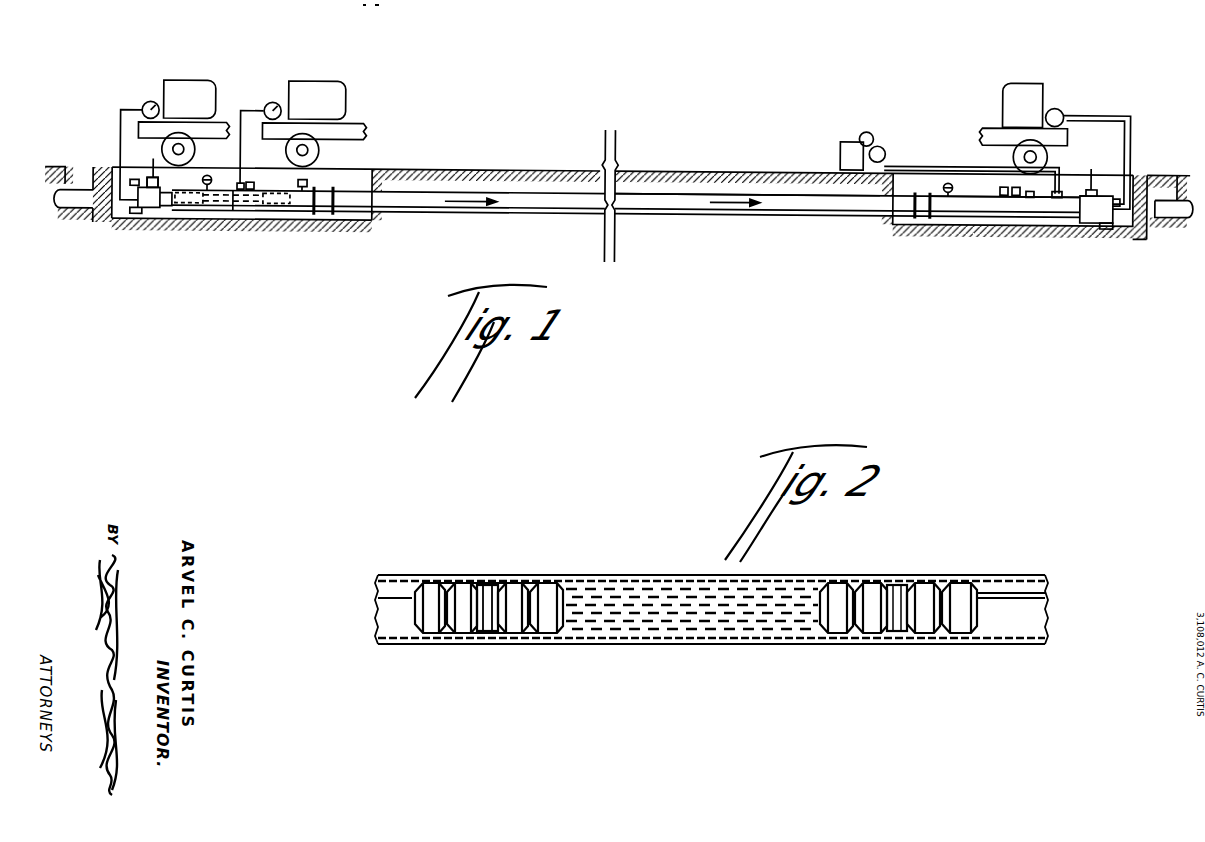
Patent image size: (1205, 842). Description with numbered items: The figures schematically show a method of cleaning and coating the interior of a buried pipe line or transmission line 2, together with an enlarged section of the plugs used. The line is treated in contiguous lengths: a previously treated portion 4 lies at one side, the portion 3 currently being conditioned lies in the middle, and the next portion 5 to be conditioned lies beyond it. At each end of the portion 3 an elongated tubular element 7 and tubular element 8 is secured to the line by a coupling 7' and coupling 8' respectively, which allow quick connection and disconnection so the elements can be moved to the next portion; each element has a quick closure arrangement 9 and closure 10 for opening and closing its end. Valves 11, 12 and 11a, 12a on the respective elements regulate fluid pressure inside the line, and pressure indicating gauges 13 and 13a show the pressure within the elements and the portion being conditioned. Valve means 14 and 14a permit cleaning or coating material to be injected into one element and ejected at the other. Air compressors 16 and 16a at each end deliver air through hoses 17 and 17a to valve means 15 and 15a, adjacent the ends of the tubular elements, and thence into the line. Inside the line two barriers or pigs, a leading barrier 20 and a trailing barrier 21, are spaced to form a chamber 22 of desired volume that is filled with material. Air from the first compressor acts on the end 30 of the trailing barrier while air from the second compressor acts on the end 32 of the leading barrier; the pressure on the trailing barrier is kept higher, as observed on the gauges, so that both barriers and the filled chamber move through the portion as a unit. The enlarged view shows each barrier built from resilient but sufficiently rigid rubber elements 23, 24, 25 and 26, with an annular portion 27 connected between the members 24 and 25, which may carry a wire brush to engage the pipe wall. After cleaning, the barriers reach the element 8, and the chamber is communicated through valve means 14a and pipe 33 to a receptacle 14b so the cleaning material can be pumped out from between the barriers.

In FIG. 1, the transmission line 2 is at (663, 194).
In FIG. 1, the portion of the transmission line to be treated 3 is at (558, 214).
In FIG. 2, the portion of the transmission line to be treated 3 is at (648, 576).
In FIG. 1, the previously treated portion 4 is at (60, 215).
In FIG. 1, the next portion of the transmission line 5 is at (1175, 214).
In FIG. 1, the tubular element 7 is at (227, 238).
In FIG. 1, the coupling 7' is at (333, 225).
In FIG. 1, the tubular element 8 is at (1004, 237).
In FIG. 1, the coupling 8' is at (909, 242).
In FIG. 1, the quick closure arrangement 9 is at (138, 185).
In FIG. 1, the quick closure arrangement 10 is at (1114, 224).
In FIG. 1, the valve 11 is at (307, 182).
In FIG. 1, the valve 11a is at (1030, 195).
In FIG. 1, the valve 12 is at (250, 184).
In FIG. 1, the valve 12a is at (1010, 184).
In FIG. 1, the pressure indicating gauge 13 is at (207, 178).
In FIG. 1, the pressure indicating gauge 13a is at (946, 182).
In FIG. 1, the valve means 14 is at (244, 193).
In FIG. 1, the valve means 14a is at (1057, 196).
In FIG. 1, the receptacle 14b is at (838, 145).
In FIG. 1, the valve means 15 is at (155, 225).
In FIG. 1, the valve means 15a is at (1084, 221).
In FIG. 1, the air compressor 16 is at (152, 92).
In FIG. 1, the air compressor 16a is at (1059, 99).
In FIG. 1, the hose 17 is at (118, 117).
In FIG. 1, the hose 17a is at (1130, 120).
In FIG. 1, the barrier 20 is at (290, 230).
In FIG. 2, the barrier 20 is at (842, 646).
In FIG. 1, the barrier 21 is at (190, 213).
In FIG. 2, the barrier 21 is at (483, 574).
In FIG. 1, the chamber 22 is at (218, 214).
In FIG. 2, the chamber 22 is at (707, 636).
In FIG. 2, the rubber element 23 is at (543, 646).
In FIG. 2, the rubber element 24 is at (505, 646).
In FIG. 2, the rubber element 25 is at (460, 646).
In FIG. 2, the rubber element 26 is at (430, 646).
In FIG. 2, the annular portion 27 is at (482, 646).
In FIG. 2, the end of the barrier 30 is at (413, 598).
In FIG. 2, the end of the barrier 32 is at (978, 612).
In FIG. 1, the pipe 33 is at (900, 163).